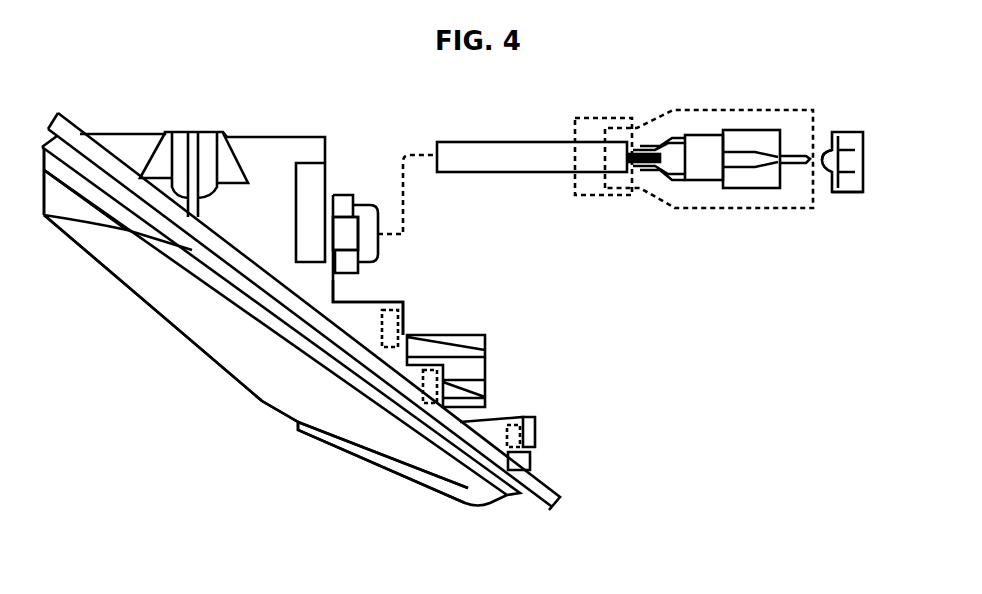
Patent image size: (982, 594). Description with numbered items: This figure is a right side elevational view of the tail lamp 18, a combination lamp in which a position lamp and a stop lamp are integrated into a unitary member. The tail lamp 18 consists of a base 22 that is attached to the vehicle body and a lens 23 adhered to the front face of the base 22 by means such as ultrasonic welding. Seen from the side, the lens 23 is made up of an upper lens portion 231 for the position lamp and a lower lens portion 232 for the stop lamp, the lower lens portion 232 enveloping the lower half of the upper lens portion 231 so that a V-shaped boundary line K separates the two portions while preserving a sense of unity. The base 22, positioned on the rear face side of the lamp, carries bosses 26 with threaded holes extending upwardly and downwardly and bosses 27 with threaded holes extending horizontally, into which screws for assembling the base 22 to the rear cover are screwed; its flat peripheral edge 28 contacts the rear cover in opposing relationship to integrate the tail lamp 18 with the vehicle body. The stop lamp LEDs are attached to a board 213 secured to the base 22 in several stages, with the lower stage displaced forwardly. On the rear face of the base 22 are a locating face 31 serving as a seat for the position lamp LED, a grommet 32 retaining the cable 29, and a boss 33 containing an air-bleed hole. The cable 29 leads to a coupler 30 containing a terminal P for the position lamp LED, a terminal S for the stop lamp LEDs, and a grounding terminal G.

The tail lamp 18 is at (187, 373).
The base 22 is at (357, 317).
The lens 23 is at (173, 318).
The bosses 26 is at (200, 133).
The bosses 27 is at (487, 363).
The flat peripheral edge 28 is at (113, 150).
The cable 29 is at (495, 150).
The coupler 30 is at (757, 130).
The locating face (seat) 31 is at (340, 195).
The grommet 32 is at (375, 205).
The boss 33 is at (355, 238).
The board 213 is at (400, 322).
The upper lens portion 231 is at (103, 255).
The lower lens portion 232 is at (280, 398).
The boundary line K is at (152, 287).
The terminal P is at (849, 132).
The grounding terminal G is at (862, 156).
The terminal S is at (838, 195).